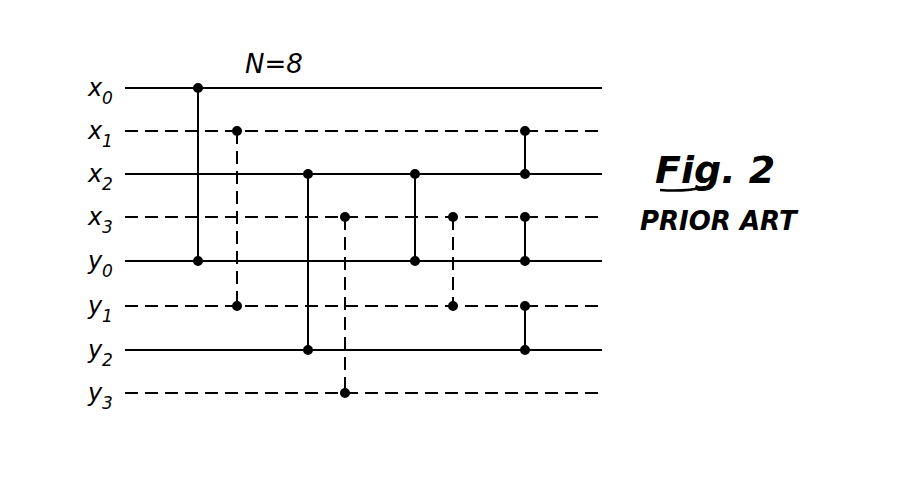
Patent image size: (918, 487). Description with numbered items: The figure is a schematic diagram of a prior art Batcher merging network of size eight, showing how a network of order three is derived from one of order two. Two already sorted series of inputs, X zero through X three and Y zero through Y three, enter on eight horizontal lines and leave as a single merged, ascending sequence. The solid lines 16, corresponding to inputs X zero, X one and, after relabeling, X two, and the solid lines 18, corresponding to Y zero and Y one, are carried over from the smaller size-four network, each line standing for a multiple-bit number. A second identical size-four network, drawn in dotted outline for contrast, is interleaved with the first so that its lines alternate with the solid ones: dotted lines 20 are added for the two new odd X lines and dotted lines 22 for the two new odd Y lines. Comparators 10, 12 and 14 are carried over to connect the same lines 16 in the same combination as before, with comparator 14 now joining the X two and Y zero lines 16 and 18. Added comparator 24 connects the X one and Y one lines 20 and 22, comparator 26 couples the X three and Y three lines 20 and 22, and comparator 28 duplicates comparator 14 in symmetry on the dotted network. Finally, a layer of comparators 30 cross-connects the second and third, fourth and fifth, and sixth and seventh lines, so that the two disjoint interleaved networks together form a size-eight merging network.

The comparator 10 is at (201, 113).
The comparator 12 is at (312, 200).
The comparator 14 is at (418, 203).
The lines 16 is at (140, 173).
The lines 18 is at (387, 261).
The lines 20 is at (178, 133).
The lines 22 is at (197, 306).
The comparator 24 is at (240, 155).
The comparator 26 is at (348, 246).
The comparator 28 is at (456, 246).
The comparators 30 is at (528, 157).